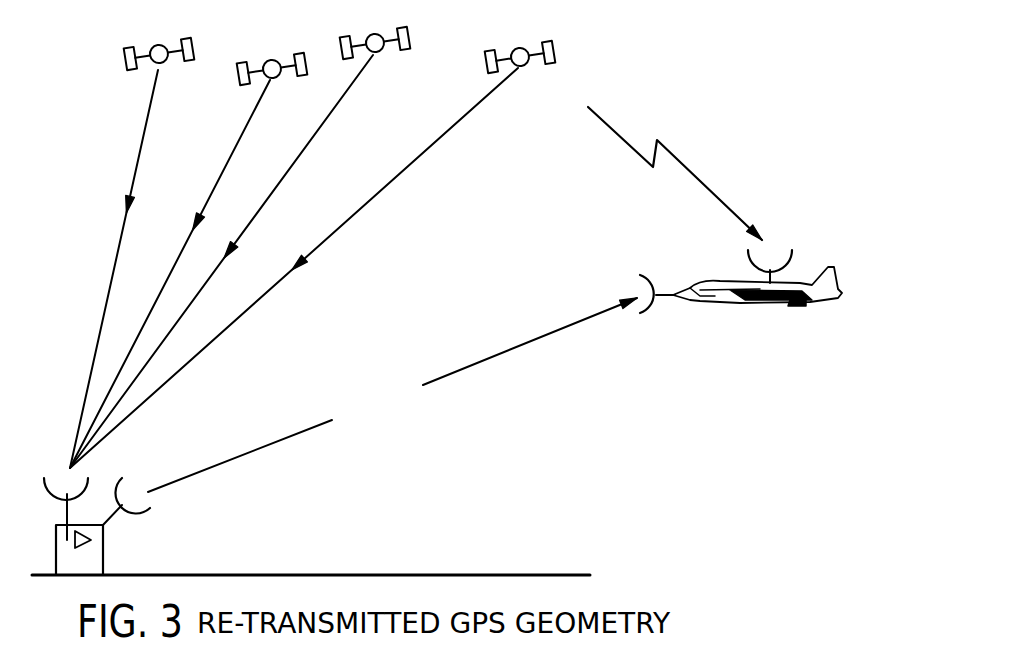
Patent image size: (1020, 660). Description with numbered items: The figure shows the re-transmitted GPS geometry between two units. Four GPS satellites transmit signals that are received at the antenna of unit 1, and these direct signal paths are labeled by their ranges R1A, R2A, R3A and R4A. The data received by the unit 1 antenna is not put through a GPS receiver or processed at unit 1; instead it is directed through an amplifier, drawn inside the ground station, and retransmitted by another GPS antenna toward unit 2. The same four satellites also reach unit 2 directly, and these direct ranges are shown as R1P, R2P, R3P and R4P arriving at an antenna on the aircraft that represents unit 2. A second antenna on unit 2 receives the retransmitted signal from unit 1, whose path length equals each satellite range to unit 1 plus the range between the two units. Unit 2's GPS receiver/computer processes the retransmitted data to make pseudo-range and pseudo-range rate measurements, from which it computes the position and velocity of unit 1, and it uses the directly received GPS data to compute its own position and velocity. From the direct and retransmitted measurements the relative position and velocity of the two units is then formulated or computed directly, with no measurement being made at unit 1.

The range from satellite one to unit 1 R1A is at (114, 269).
The range from satellite two to unit 1 R2A is at (170, 274).
The range from satellite three to unit 1 R3A is at (221, 261).
The range from satellite four to unit 1 R4A is at (294, 268).
The range from satellite one to unit 2 R1P is at (688, 163).
The range from satellite two to unit 2 R2P is at (688, 173).
The range from satellite three to unit 2 R3P is at (688, 173).
The range from satellite four to unit 2 R4P is at (688, 173).
The unit 1 is at (311, 526).
The unit 2 is at (741, 305).